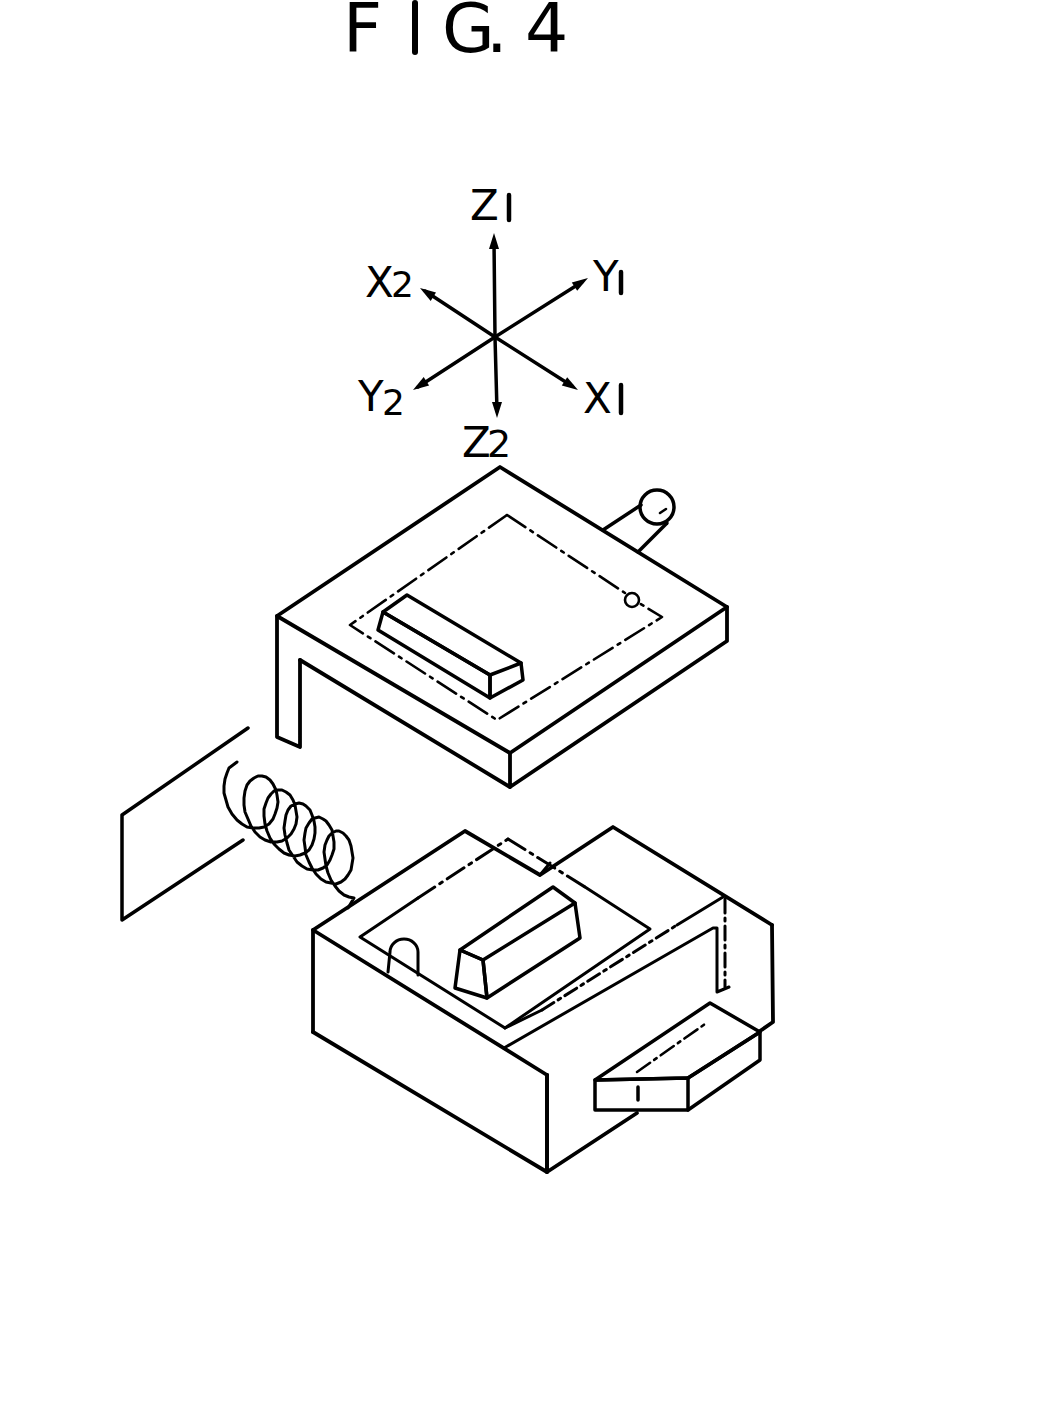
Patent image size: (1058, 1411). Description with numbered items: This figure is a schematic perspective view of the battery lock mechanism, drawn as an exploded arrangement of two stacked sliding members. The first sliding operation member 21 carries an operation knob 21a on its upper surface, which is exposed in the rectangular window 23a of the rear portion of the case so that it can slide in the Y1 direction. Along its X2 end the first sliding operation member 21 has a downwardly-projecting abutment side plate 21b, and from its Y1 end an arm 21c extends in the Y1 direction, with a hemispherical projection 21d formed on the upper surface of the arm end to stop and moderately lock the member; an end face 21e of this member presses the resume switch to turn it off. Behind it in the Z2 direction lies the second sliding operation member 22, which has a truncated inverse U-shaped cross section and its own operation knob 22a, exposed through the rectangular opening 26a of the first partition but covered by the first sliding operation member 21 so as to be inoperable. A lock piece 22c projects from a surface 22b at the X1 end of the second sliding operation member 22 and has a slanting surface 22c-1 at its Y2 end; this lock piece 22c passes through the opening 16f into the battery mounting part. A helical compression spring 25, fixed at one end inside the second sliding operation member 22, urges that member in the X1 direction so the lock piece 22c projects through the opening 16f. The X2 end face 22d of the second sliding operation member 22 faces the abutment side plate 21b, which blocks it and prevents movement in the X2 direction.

The first sliding operation member 21 is at (758, 658).
The operation knob 21a is at (472, 648).
The abutment side plate 21b is at (268, 690).
The arm 21c is at (670, 527).
The hemispherical projection 21d is at (657, 490).
The end face 21e is at (393, 718).
The rectangular window 23a is at (639, 600).
The second sliding operation member 22 is at (713, 832).
The operation knob 22a is at (460, 978).
The surface 22b is at (557, 1117).
The lock piece 22c is at (738, 1063).
The slanting surface 22c-1 is at (668, 1112).
The X2 end face 22d is at (325, 918).
The helical compression spring 25 is at (275, 847).
The rectangular opening 26a is at (388, 972).
The opening 16f is at (642, 1117).